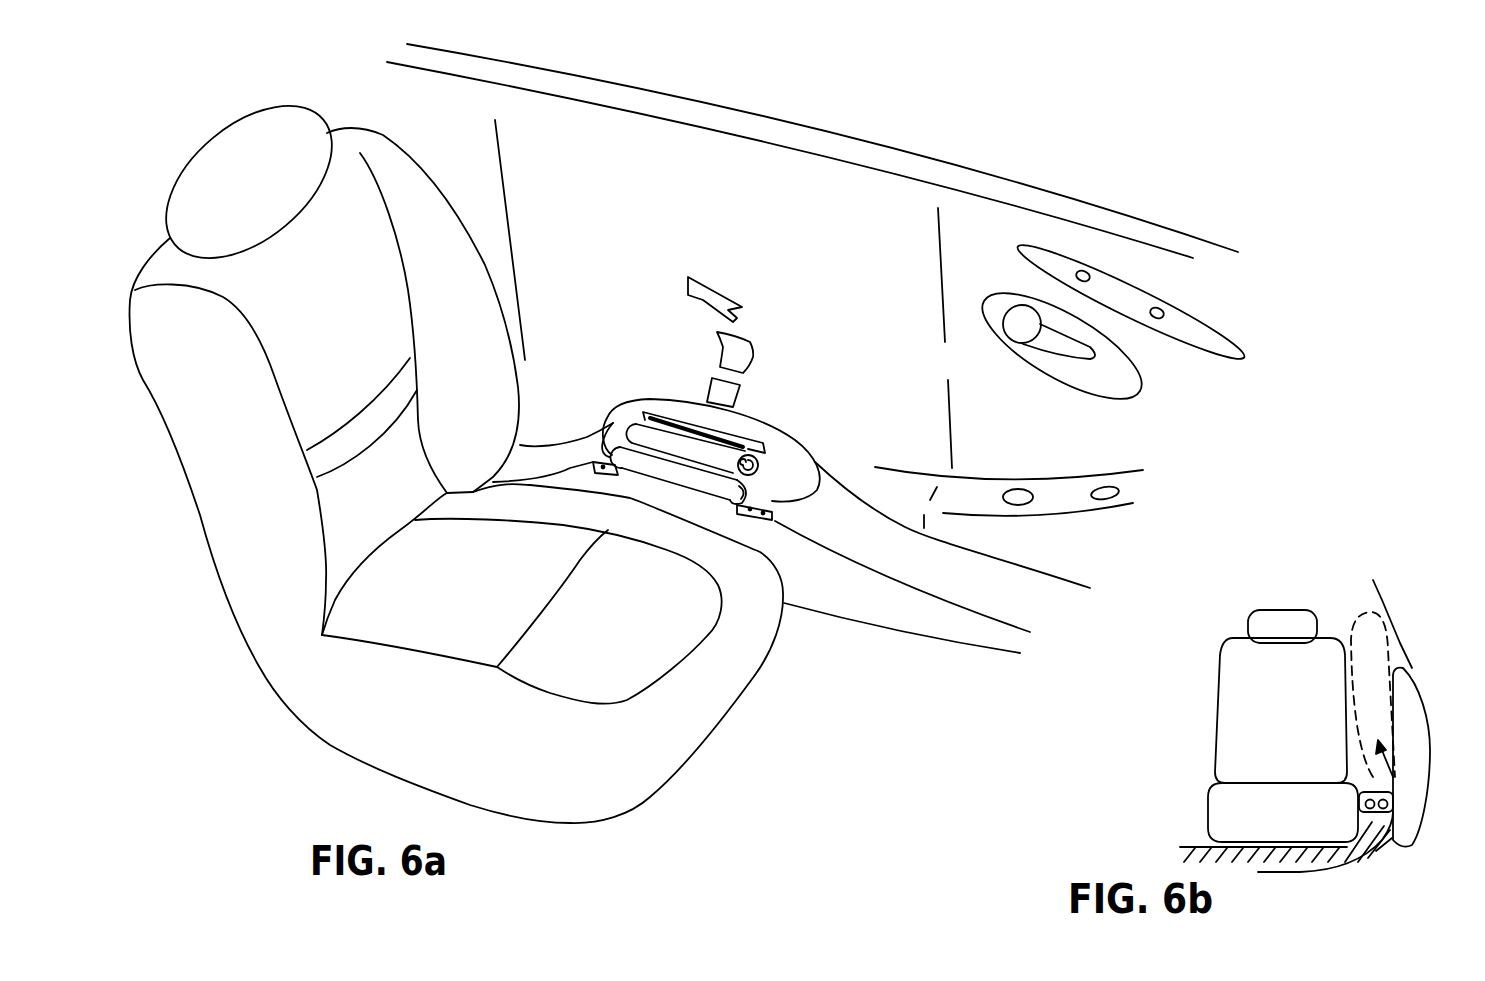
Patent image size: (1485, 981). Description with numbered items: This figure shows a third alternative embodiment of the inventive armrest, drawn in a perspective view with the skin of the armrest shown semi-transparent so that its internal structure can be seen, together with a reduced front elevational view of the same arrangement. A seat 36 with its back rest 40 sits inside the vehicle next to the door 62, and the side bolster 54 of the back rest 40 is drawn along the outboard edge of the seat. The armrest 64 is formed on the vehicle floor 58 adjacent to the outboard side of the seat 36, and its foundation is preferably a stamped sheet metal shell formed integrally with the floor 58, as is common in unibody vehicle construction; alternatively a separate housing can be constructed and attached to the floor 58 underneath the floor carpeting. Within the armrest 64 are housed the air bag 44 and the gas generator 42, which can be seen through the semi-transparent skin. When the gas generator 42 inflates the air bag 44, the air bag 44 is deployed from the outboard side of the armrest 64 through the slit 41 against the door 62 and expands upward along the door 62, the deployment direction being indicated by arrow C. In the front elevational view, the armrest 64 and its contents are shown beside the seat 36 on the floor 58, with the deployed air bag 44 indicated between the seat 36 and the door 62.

In FIG. 6a, the seat 36 is at (285, 718).
In FIG. 6b, the seat 36 is at (1210, 702).
In FIG. 6a, the back rest 40 is at (347, 328).
In FIG. 6b, the back rest 40 is at (1296, 712).
In FIG. 6a, the slit 41 is at (745, 425).
In FIG. 6b, the slit 41 is at (1400, 810).
In FIG. 6a, the gas generator 42 is at (697, 478).
In FIG. 6b, the gas generator 42 is at (1364, 793).
In FIG. 6a, the air bag 44 is at (637, 423).
In FIG. 6b, the air bag 44 is at (1383, 642).
In FIG. 6a, the side bolster 54 is at (427, 175).
In FIG. 6a, the vehicle floor 58 is at (950, 585).
In FIG. 6b, the vehicle floor 58 is at (1203, 847).
In FIG. 6a, the door 62 is at (802, 255).
In FIG. 6a, the armrest 64 is at (732, 410).
In FIG. 6b, the armrest 64 is at (1347, 808).
In FIG. 6a, the arrow C is at (755, 357).